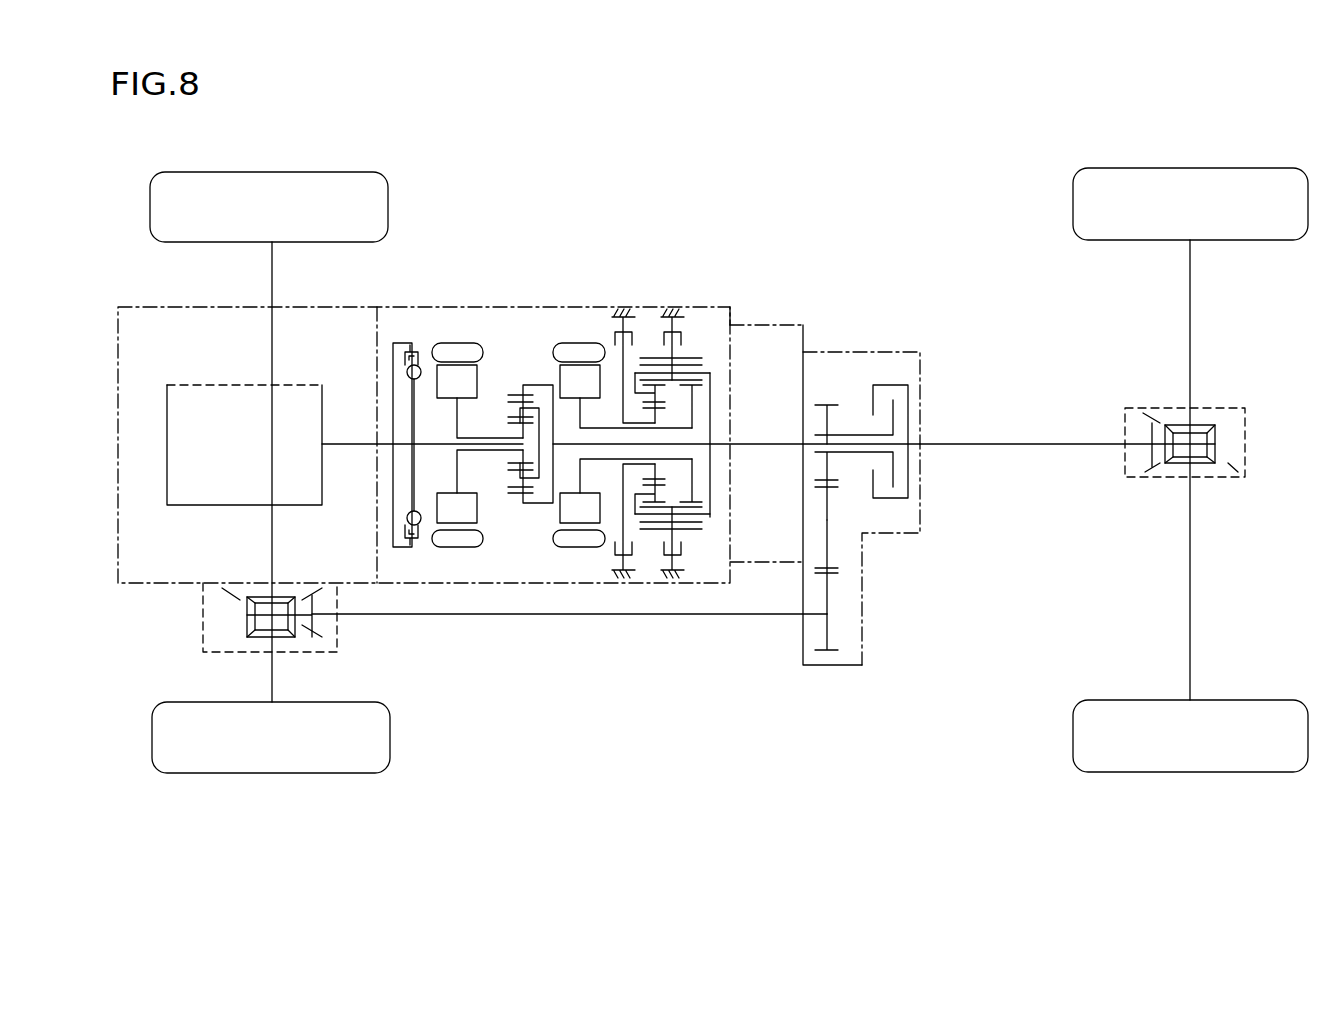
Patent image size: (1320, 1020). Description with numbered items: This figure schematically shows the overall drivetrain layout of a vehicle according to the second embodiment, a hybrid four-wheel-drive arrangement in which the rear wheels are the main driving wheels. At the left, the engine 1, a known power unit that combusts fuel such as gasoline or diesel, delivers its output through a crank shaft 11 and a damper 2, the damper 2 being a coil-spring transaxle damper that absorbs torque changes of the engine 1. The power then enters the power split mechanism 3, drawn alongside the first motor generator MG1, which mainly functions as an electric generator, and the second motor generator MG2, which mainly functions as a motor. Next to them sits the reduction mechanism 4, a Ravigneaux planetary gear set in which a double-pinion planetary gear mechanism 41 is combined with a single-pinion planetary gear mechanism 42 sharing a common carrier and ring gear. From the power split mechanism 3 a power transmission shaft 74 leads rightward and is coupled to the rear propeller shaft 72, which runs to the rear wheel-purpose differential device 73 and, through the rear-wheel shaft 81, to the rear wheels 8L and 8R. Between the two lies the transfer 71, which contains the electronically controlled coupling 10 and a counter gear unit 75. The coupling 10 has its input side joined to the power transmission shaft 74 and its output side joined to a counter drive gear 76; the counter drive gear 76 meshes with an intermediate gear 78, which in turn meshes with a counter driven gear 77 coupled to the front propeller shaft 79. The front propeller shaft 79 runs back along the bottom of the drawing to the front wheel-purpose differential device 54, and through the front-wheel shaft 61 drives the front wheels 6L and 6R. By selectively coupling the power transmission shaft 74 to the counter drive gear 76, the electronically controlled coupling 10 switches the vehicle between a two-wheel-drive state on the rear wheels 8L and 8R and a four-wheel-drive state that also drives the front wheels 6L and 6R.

The engine 1 is at (182, 378).
The damper 2 is at (402, 337).
The power split mechanism 3 is at (530, 380).
The reduction mechanism 4 is at (671, 456).
The first motor generator MG1 is at (452, 337).
The second motor generator MG2 is at (575, 337).
The electronically controlled coupling 10 is at (909, 378).
The crank shaft 11 is at (347, 443).
The double-pinion planetary gear mechanism 41 is at (639, 541).
The single-pinion planetary gear mechanism 42 is at (695, 541).
The front wheel-purpose differential device 54 is at (307, 640).
The front-wheel shaft 61 is at (272, 269).
The front wheel 6R is at (388, 199).
The front wheel 6L is at (390, 735).
The transfer 71 is at (887, 340).
The propeller shaft 72 is at (1025, 447).
The rear wheel-purpose differential device 73 is at (1140, 462).
The power transmission shaft 74 is at (757, 443).
The counter gear unit 75 is at (852, 517).
The counter drive gear 76 is at (827, 420).
The counter driven gear 77 is at (830, 625).
The intermediate gear 78 is at (830, 550).
The front propeller shaft 79 is at (522, 615).
The rear-wheel shaft 81 is at (1193, 335).
The rear wheel 8R is at (1073, 203).
The rear wheel 8L is at (1073, 735).